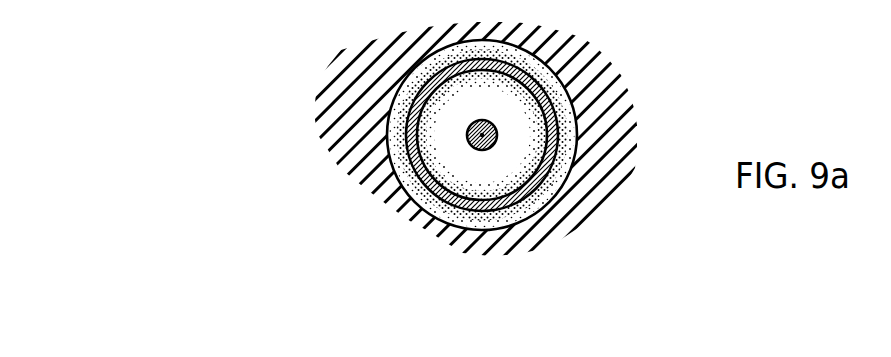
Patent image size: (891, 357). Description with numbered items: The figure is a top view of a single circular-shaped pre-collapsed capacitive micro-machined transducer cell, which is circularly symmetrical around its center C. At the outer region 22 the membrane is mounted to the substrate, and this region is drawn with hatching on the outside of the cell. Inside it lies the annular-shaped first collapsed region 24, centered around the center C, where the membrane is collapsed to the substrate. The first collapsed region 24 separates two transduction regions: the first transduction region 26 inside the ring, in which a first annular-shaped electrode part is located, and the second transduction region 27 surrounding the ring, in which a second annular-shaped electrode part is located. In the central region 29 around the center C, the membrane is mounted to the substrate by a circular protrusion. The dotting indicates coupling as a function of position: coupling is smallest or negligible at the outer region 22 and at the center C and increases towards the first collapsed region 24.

The outer region 22 is at (588, 178).
The first collapsed region 24 is at (522, 80).
The first transduction region 26 is at (506, 102).
The second transduction region 27 is at (433, 72).
The central region 29 is at (468, 143).
The center C is at (484, 135).